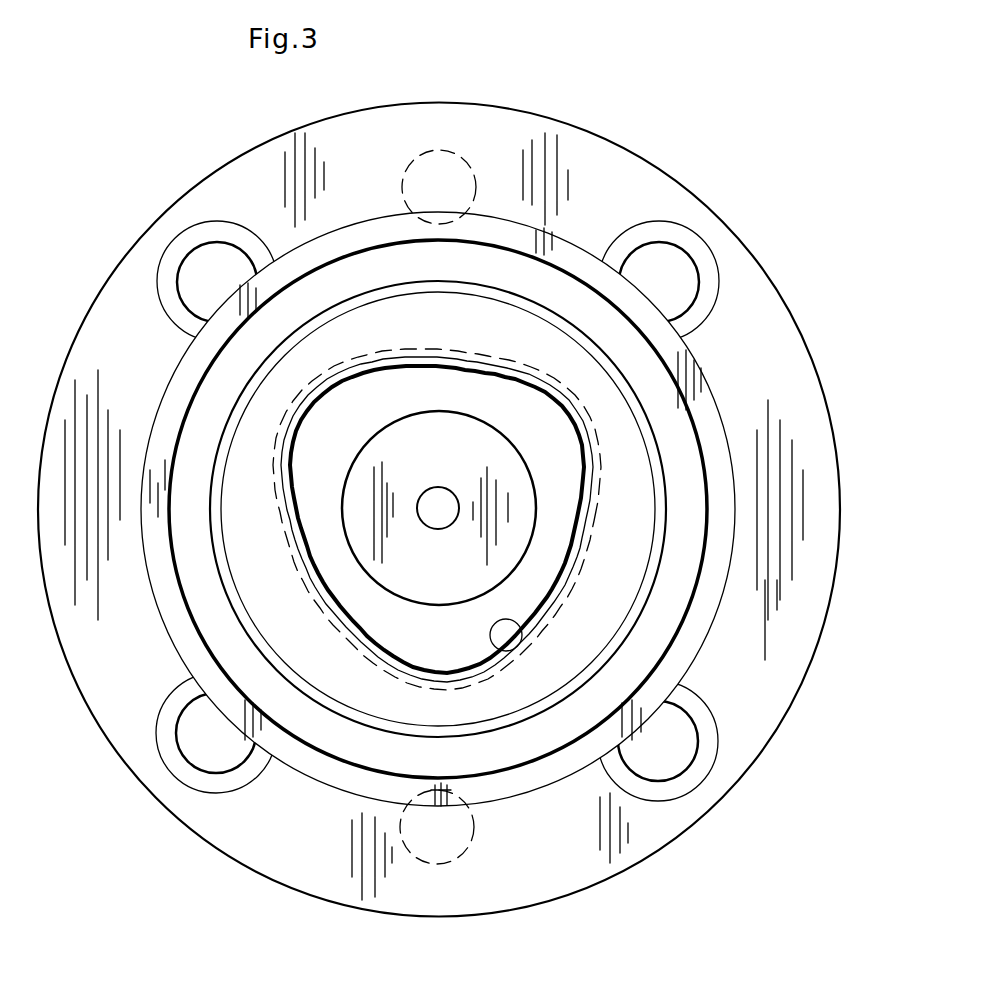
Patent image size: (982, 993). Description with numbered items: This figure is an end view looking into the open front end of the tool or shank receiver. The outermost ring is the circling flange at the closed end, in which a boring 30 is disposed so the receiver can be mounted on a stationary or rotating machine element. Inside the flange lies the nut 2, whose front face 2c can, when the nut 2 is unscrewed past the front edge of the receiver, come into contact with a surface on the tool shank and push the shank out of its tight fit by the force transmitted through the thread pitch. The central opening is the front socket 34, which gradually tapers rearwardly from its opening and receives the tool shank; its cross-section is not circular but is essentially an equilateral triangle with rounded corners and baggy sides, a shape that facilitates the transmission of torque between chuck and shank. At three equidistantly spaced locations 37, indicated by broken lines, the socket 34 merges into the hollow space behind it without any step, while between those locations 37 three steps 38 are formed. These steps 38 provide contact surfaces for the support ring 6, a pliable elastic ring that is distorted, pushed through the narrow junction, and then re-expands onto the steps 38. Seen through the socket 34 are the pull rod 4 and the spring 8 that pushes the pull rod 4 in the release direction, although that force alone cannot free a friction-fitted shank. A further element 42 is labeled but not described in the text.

The nut 2 is at (707, 670).
The front face of the nut 2c is at (300, 735).
The pull rod 4 is at (382, 562).
The support ring 6 is at (327, 483).
The spring 8 is at (442, 498).
The boring 30 is at (672, 765).
The socket 34 is at (498, 655).
The locations 37 is at (300, 415).
The steps 38 is at (412, 352).
The annular passage 42 is at (363, 700).